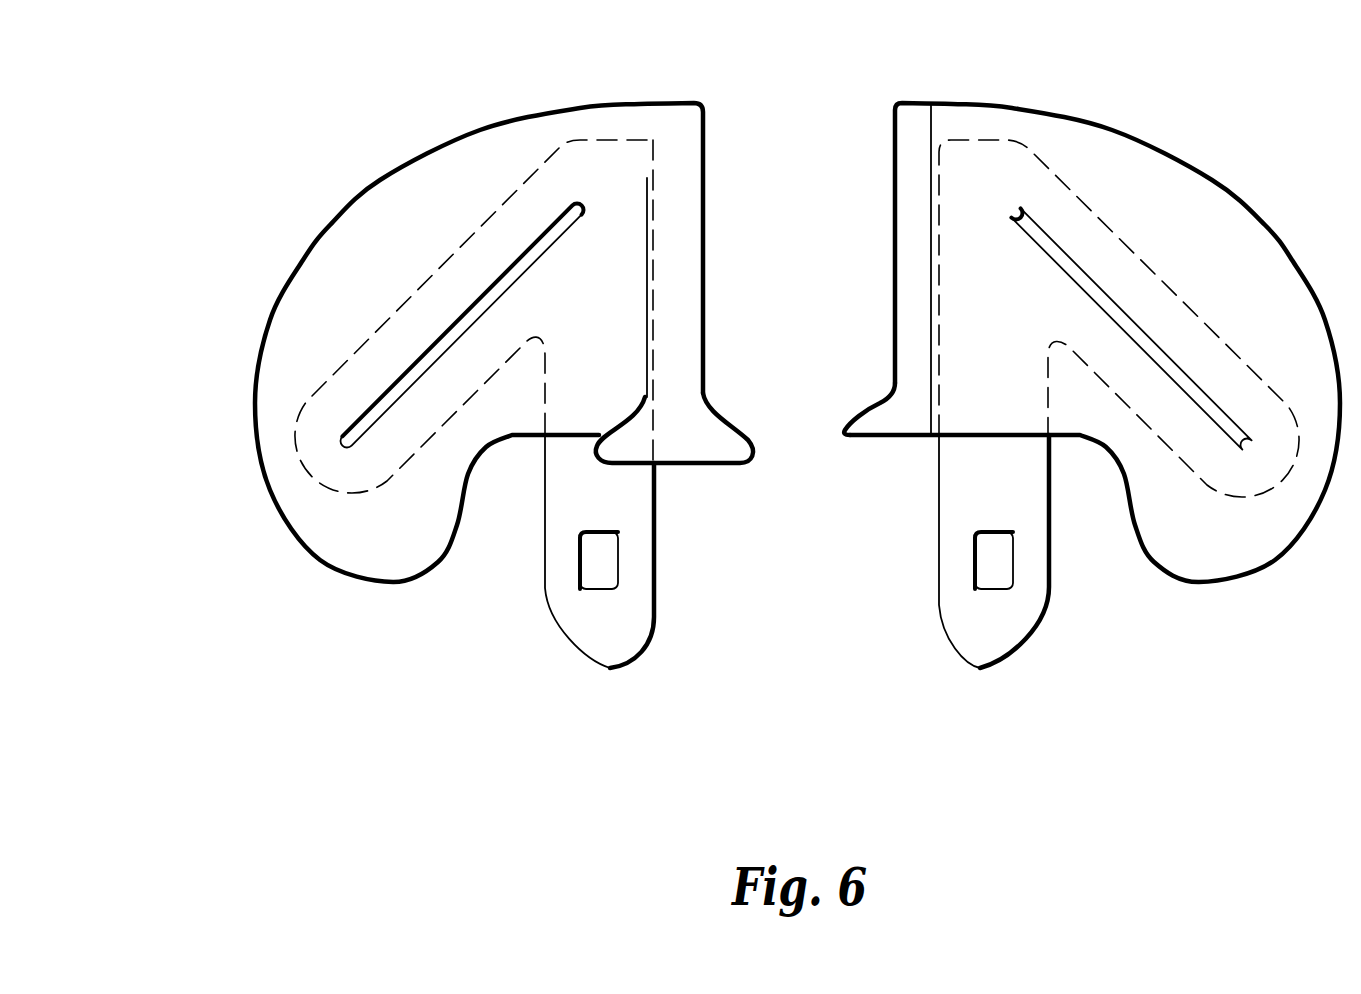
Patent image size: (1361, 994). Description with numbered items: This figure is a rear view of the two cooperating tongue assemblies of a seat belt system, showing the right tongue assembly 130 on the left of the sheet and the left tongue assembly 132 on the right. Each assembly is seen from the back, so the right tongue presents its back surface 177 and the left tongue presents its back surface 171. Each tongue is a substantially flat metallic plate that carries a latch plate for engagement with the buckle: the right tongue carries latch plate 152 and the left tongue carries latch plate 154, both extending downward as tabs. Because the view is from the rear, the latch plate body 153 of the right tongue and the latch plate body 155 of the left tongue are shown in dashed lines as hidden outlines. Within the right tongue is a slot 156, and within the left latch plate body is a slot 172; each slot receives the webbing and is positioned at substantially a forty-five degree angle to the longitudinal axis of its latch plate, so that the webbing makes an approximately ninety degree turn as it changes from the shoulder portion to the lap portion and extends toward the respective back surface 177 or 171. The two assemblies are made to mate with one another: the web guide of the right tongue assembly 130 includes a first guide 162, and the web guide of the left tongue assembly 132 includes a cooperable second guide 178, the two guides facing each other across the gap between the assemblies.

The right tongue assembly 130 is at (481, 401).
The left tongue assembly 132 is at (1082, 374).
The latch plate 152 is at (587, 657).
The latch plate body 153 is at (552, 182).
The latch plate 154 is at (1018, 647).
The latch plate body 155 is at (977, 157).
The slot 156 is at (343, 445).
The first guide 162 is at (705, 242).
The back surface 171 is at (1208, 235).
The slot 172 is at (1246, 447).
The back surface 177 is at (335, 293).
The second guide 178 is at (883, 396).